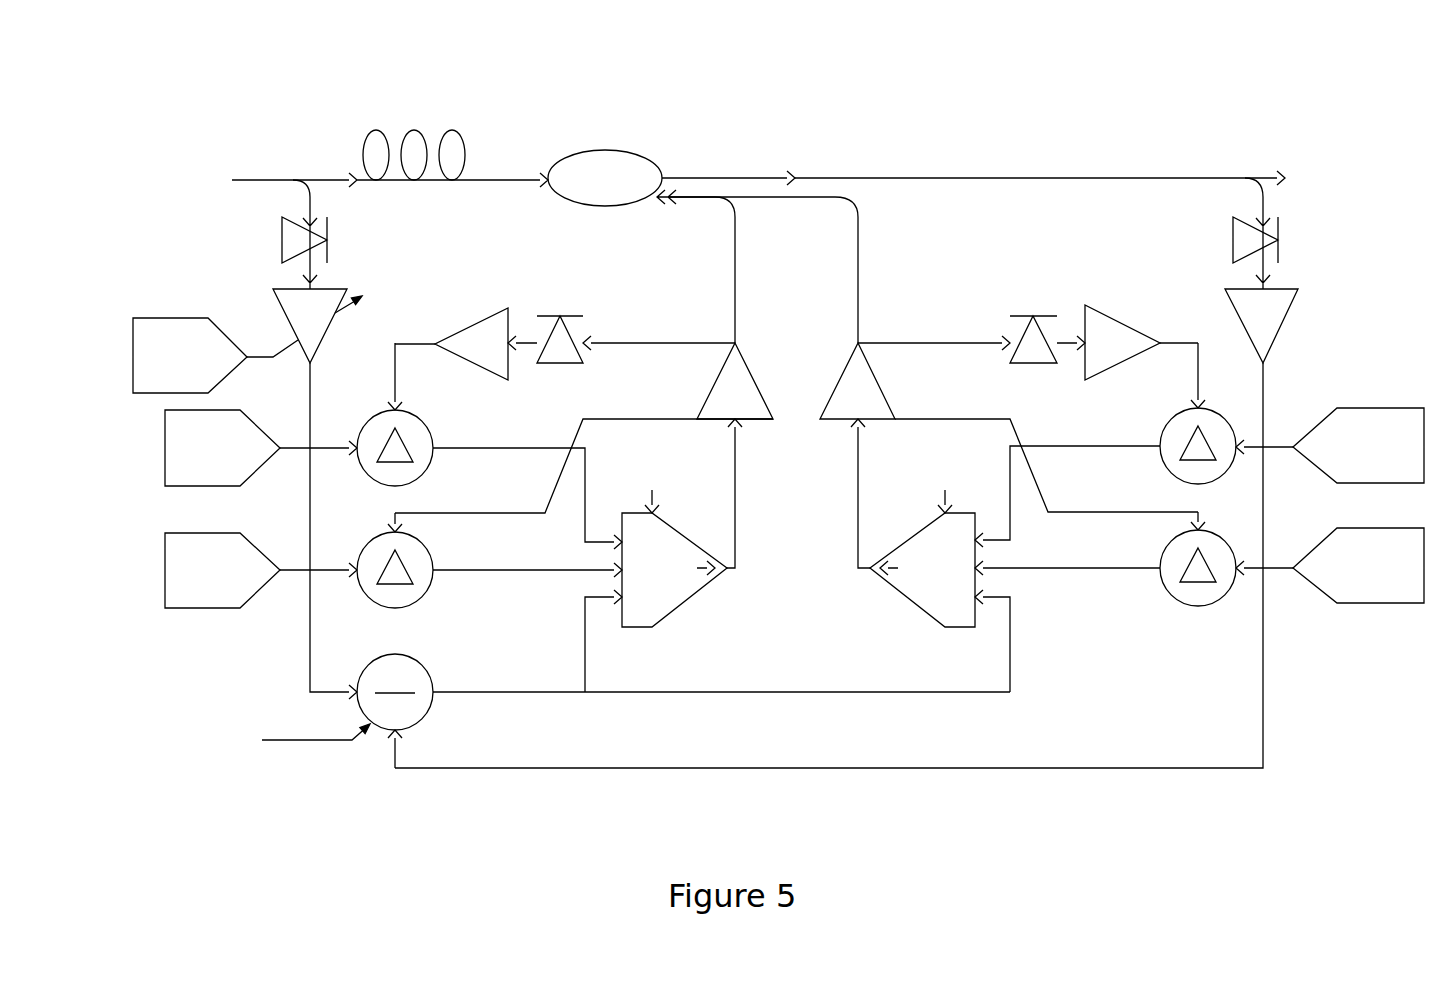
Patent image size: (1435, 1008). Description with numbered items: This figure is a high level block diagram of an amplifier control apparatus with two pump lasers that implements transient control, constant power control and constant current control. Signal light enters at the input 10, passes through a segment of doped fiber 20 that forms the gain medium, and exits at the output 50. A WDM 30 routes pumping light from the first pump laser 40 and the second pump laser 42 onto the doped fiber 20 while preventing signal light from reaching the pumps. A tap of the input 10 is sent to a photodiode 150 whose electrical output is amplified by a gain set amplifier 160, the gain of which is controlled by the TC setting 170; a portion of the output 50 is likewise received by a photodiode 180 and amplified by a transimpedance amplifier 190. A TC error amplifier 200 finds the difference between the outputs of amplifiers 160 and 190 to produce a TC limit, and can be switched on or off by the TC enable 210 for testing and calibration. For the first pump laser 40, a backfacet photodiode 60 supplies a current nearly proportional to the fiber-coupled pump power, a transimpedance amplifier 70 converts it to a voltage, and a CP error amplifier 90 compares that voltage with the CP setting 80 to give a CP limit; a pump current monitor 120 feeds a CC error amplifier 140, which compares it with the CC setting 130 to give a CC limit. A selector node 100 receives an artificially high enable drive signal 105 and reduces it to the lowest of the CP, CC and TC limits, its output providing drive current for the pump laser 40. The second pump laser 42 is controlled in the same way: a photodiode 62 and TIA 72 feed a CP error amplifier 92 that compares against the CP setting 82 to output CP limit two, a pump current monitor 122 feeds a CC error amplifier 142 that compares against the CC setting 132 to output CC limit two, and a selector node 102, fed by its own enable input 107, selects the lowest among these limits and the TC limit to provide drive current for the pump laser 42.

The input 10 is at (198, 152).
The doped fiber 20 is at (437, 127).
The WDM 30 is at (605, 145).
The pump laser 40 is at (775, 406).
The second pump laser 42 is at (893, 402).
The output 50 is at (1240, 140).
The backfacet photodiode 60 is at (560, 310).
The photodiode 62 is at (1033, 302).
The transimpedance amplifier 70 is at (470, 315).
The TIA 72 is at (1113, 310).
The CP setting 80 is at (160, 452).
The CP setting 82 is at (1373, 405).
The CP error amplifier 90 is at (367, 417).
The CP error amplifier 92 is at (1182, 407).
The selector node 100 is at (689, 610).
The selector node 102 is at (928, 615).
The enable drive signal 105 is at (618, 490).
The second enable input 107 is at (993, 468).
The pump current monitor 120 is at (603, 410).
The pump current monitor 122 is at (1010, 408).
The CC setting 130 is at (160, 573).
The CC setting 132 is at (1365, 605).
The CC error amplifier 140 is at (367, 540).
The CC error amplifier 142 is at (1197, 605).
The photodiode 150 is at (277, 250).
The gain set amplifier 160 is at (277, 313).
The TC setting 170 is at (128, 355).
The photodiode 180 is at (1227, 243).
The transimpedance amplifier 190 is at (1227, 310).
The TC error amplifier 200 is at (367, 663).
The TC enable 210 is at (163, 738).